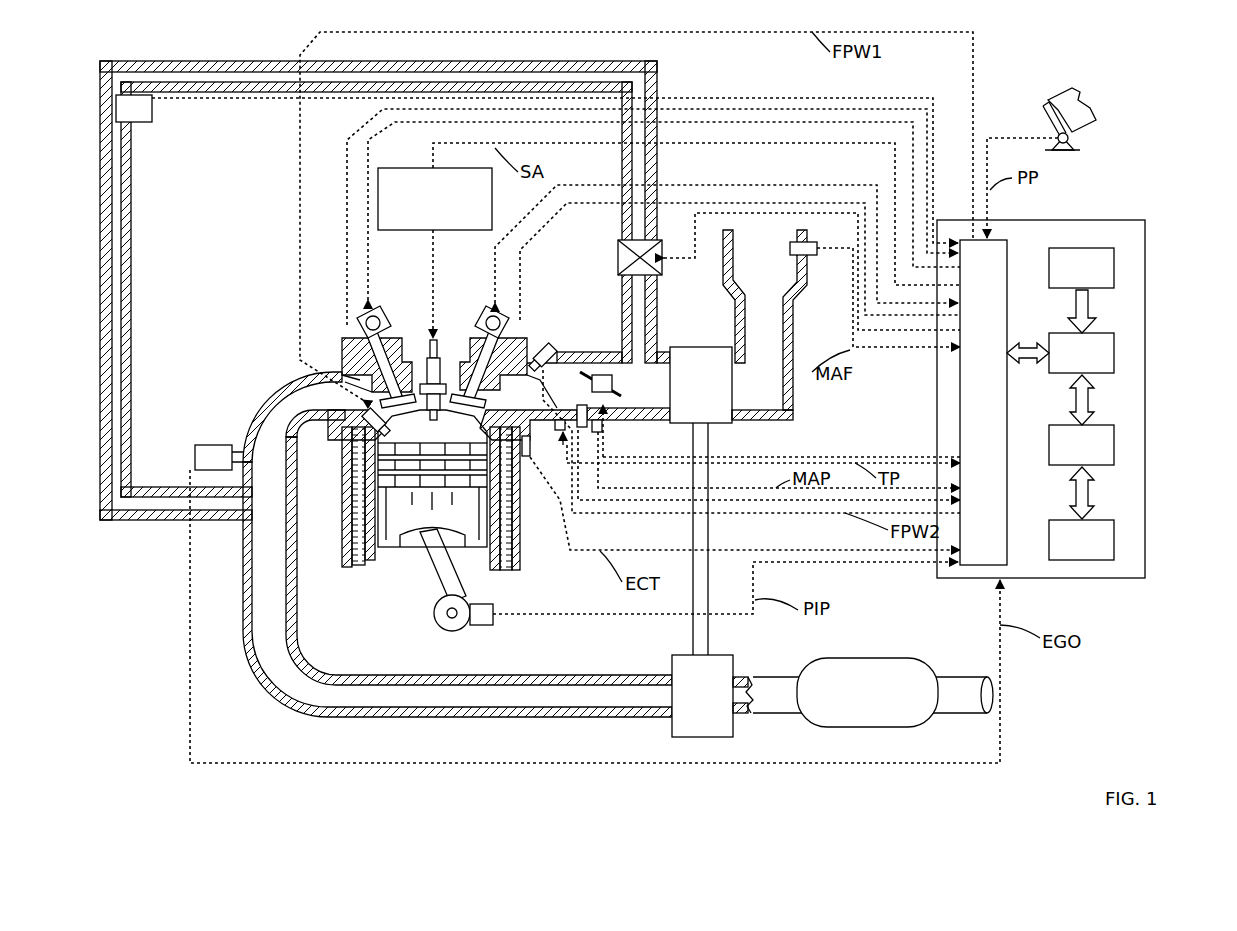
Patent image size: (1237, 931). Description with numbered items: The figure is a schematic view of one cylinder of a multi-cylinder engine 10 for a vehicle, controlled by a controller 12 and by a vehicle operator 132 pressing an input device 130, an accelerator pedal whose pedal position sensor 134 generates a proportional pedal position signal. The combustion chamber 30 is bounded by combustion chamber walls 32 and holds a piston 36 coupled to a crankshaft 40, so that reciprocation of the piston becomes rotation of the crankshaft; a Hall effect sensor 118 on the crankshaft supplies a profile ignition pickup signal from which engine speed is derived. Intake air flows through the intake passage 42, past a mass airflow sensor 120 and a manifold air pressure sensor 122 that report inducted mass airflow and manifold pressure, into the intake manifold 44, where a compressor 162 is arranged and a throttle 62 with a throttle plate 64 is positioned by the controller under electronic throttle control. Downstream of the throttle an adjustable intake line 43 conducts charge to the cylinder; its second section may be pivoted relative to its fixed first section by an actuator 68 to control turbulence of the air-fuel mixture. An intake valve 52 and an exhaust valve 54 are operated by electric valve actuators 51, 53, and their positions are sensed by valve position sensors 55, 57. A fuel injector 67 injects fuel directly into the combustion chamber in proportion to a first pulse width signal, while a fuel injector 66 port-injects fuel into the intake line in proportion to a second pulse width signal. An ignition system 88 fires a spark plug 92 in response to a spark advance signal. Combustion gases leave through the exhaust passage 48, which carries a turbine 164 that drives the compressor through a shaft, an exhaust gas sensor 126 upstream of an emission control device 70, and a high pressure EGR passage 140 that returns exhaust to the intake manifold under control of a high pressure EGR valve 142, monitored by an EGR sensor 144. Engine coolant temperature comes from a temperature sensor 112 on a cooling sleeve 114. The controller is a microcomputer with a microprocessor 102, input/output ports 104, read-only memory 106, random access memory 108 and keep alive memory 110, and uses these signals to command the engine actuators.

The engine 10 is at (282, 296).
The controller 12 is at (1080, 388).
The combustion chamber 30 is at (352, 512).
The combustion chamber walls 32 is at (375, 556).
The piston 36 is at (415, 525).
The crankshaft 40 is at (440, 628).
The intake passage 42 is at (765, 325).
The adjustable intake line 43 is at (576, 412).
The intake manifold 44 is at (613, 386).
The exhaust passage 48 is at (457, 544).
The electric valve actuator 51 is at (493, 306).
The intake valve 52 is at (442, 372).
The electric valve actuator 53 is at (375, 308).
The exhaust valve 54 is at (348, 385).
The valve position sensor 55 is at (510, 326).
The valve position sensor 57 is at (358, 322).
The throttle 62 is at (601, 372).
The throttle plate 64 is at (594, 372).
The fuel injector 66 is at (546, 348).
The fuel injector 67 is at (378, 432).
The actuator 68 is at (575, 448).
The emission control device 70 is at (905, 660).
The ignition system 88 is at (410, 168).
The spark plug 92 is at (428, 370).
The microprocessor 102 is at (1114, 355).
The input/output ports 104 is at (1007, 248).
The read-only memory 106 is at (1114, 265).
The random access memory 108 is at (1114, 445).
The keep alive memory 110 is at (1114, 540).
The temperature sensor 112 is at (530, 460).
The cooling sleeve 114 is at (515, 555).
The Hall effect sensor 118 is at (485, 627).
The mass airflow sensor 120 is at (805, 255).
The manifold air pressure sensor 122 is at (600, 433).
The exhaust gas sensor 126 is at (195, 452).
The input device 130 is at (1048, 122).
The vehicle operator 132 is at (1096, 108).
The pedal position sensor 134 is at (1070, 140).
The high pressure EGR passage 140 is at (657, 85).
The high pressure EGR valve 142 is at (618, 258).
The EGR sensor 144 is at (150, 122).
The compressor 162 is at (700, 347).
The turbine 164 is at (672, 722).